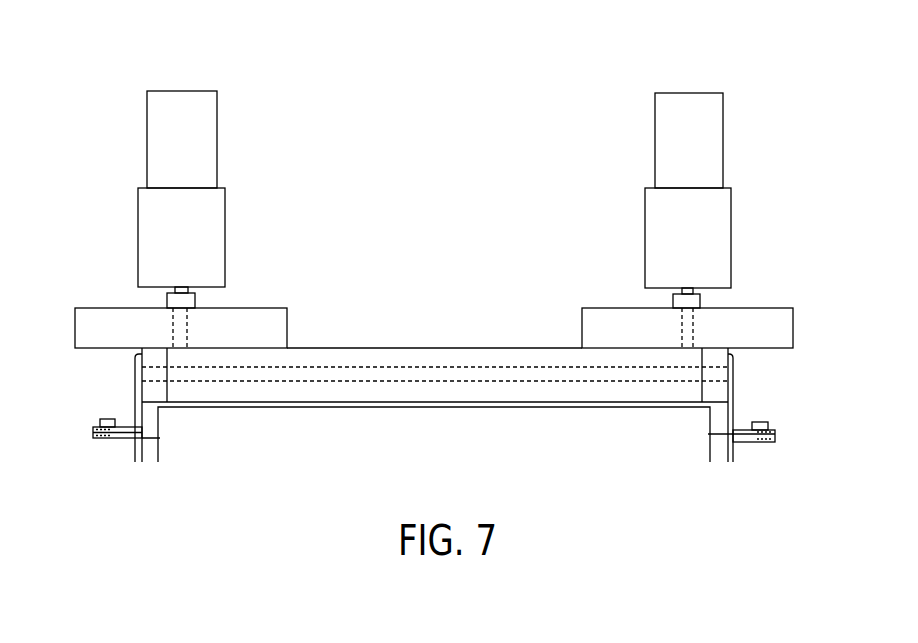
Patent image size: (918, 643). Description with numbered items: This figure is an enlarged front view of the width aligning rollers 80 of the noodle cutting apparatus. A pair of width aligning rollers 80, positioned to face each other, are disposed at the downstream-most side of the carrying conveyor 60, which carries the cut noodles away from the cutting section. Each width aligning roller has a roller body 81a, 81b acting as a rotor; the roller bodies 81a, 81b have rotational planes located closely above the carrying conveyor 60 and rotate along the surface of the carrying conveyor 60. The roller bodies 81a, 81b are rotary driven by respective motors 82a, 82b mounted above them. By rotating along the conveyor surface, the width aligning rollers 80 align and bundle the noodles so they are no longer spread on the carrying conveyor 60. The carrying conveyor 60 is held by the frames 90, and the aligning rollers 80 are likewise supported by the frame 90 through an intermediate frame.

The width aligning roller 80 is at (181, 80).
The motor 82a is at (723, 143).
The motor 82b is at (147, 138).
The roller body 81a is at (765, 308).
The roller body 81b is at (102, 307).
The carrying conveyor 60 is at (420, 348).
The frame 90 is at (160, 447).